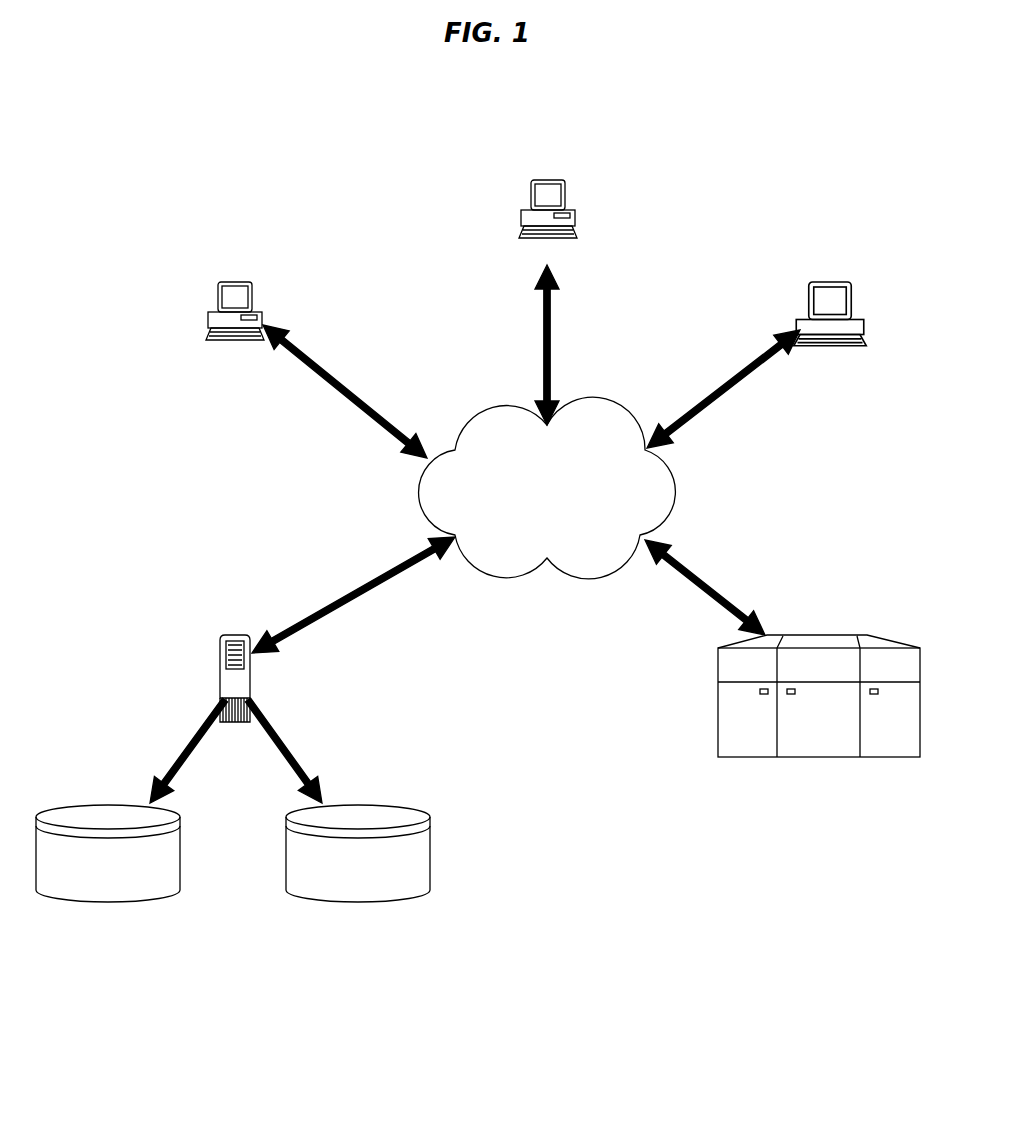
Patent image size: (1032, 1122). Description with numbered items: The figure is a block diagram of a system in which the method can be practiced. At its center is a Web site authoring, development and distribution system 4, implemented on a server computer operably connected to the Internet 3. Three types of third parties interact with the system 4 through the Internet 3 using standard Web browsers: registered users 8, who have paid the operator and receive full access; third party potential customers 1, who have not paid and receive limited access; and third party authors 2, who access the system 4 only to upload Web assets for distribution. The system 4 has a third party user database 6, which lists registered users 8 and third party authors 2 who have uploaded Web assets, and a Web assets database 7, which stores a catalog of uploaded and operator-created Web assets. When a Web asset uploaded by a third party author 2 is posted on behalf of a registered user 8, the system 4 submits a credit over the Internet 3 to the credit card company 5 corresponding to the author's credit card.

The third party potential customer 1 is at (233, 280).
The third party author 2 is at (830, 280).
The Internet 3 is at (417, 492).
The Web site authoring, development and distribution system 4 is at (220, 657).
The credit card company 5 is at (718, 697).
The third party user database 6 is at (107, 903).
The Web assets database 7 is at (430, 855).
The registered user 8 is at (562, 180).